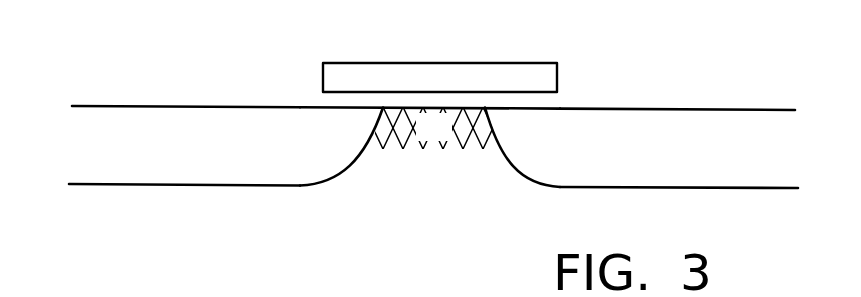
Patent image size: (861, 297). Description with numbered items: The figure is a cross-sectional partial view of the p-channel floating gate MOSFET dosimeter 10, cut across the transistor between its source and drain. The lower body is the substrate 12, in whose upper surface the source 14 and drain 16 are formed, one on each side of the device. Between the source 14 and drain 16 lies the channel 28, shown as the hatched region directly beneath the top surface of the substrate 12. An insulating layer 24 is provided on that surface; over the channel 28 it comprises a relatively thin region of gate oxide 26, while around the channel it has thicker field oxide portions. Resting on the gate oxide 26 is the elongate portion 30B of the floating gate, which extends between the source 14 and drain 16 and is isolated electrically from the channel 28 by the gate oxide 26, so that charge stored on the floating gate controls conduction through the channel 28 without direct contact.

The p-channel floating gate MOSFET dosimeter 10 is at (114, 213).
The substrate 12 is at (447, 206).
The source 14 is at (89, 128).
The drain 16 is at (760, 119).
The insulating layer 24 is at (178, 72).
The gate oxide 26 is at (341, 98).
The channel 28 is at (447, 138).
The elongate portion 30B is at (448, 63).